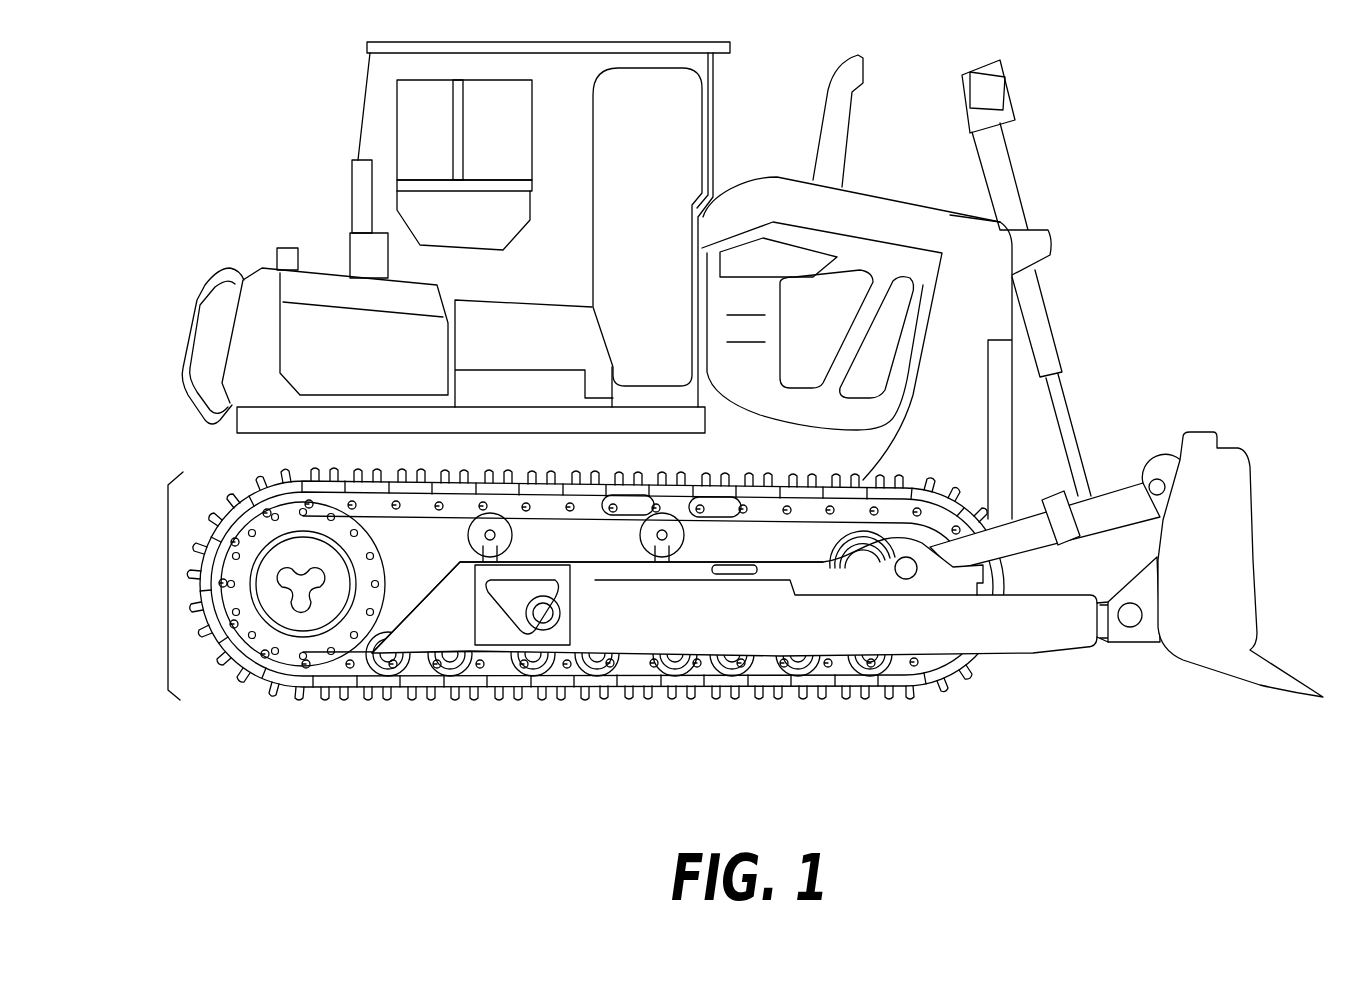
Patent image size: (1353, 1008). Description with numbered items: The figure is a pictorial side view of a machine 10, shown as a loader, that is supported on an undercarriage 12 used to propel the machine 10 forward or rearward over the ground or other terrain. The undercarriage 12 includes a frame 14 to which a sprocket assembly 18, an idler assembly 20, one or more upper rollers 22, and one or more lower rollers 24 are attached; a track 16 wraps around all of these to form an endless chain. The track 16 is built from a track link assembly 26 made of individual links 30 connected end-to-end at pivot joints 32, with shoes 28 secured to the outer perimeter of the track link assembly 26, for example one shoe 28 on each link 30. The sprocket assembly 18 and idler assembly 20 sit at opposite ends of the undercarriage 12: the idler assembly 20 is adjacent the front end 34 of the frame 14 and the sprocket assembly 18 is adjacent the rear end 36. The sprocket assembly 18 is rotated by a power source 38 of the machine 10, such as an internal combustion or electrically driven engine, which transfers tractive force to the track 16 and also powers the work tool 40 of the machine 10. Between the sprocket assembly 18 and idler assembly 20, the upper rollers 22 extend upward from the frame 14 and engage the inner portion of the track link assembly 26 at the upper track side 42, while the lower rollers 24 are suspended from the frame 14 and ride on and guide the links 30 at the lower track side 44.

The machine 10 is at (1180, 175).
The undercarriage 12 is at (166, 572).
The frame 14 is at (303, 445).
The track 16 is at (327, 707).
The sprocket assembly 18 is at (237, 665).
The idler assembly 20 is at (870, 560).
The upper rollers 22 is at (492, 530).
The lower rollers 24 is at (460, 682).
The track link assembly 26 is at (405, 527).
The shoes 28 is at (550, 684).
The links 30 is at (628, 516).
The pivot joints 32 is at (250, 517).
The front end 34 is at (978, 703).
The rear end 36 is at (124, 692).
The power source 38 is at (853, 277).
The work tool 40 is at (1213, 586).
The upper track side 42 is at (438, 445).
The lower track side 44 is at (706, 712).